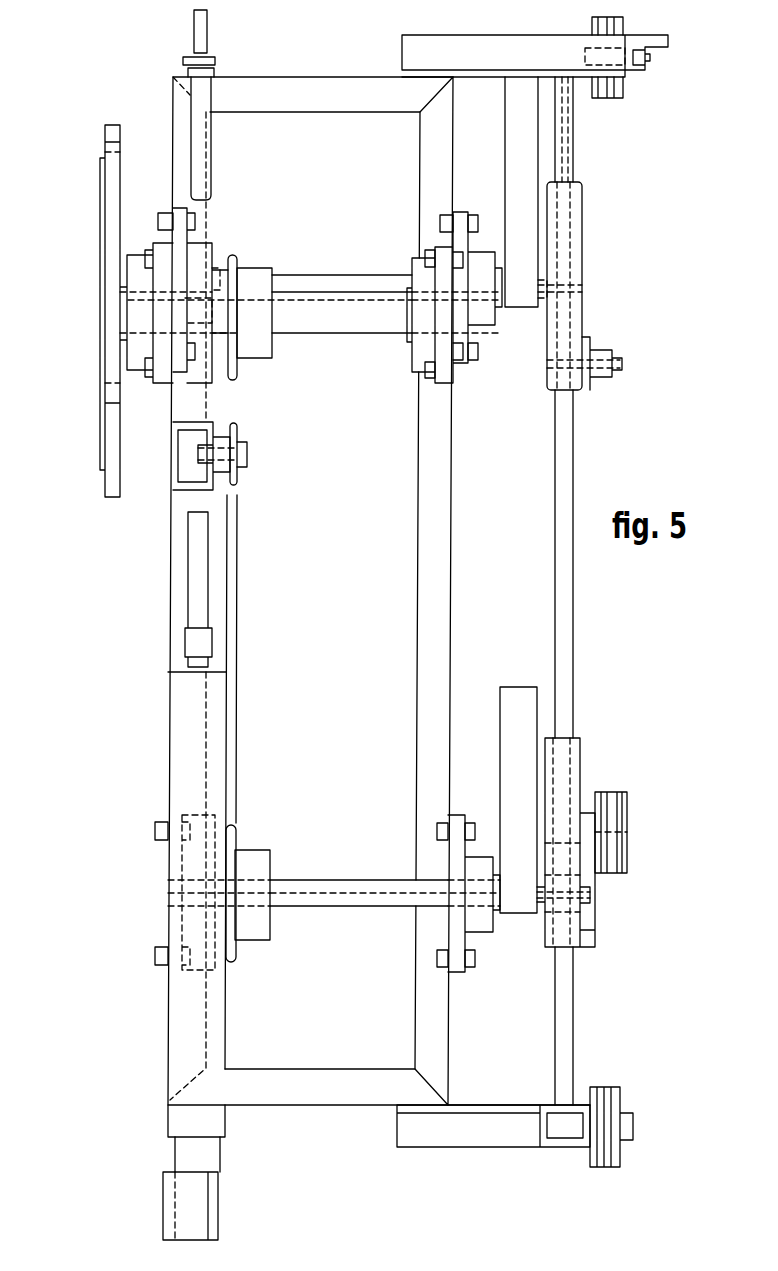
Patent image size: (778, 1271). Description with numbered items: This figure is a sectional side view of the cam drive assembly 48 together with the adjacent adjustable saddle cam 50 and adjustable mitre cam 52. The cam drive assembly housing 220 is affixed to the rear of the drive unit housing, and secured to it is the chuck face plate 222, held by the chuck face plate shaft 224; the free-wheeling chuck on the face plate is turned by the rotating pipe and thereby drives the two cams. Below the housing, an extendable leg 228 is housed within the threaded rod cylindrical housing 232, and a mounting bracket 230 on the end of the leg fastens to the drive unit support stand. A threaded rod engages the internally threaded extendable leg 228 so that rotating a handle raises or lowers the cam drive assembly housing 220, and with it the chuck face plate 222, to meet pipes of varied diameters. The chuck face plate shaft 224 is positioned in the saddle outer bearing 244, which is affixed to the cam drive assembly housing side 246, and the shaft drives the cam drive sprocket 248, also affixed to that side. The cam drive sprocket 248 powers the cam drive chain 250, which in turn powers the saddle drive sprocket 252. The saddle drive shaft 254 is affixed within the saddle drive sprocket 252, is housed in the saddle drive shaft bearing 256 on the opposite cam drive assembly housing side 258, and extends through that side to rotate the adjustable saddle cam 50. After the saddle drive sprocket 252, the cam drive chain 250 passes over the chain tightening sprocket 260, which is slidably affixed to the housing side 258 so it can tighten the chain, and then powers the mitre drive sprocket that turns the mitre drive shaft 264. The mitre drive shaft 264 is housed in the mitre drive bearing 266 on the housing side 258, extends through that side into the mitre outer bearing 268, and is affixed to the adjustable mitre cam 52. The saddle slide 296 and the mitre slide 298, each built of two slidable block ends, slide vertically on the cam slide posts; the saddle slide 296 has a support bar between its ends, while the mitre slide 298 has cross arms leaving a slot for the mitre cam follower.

The drive assembly frame 48 is at (299, 550).
The adjustable saddle cam 50 is at (517, 208).
The adjustable mitre cam 52 is at (513, 700).
The cam drive assembly housing 220 is at (280, 102).
The chuck face plate 222 is at (110, 292).
The chuck face plate shaft 224 is at (343, 318).
The extendable leg 228 is at (208, 1155).
The mounting bracket 230 is at (213, 1193).
The threaded rod cylindrical housing 232 is at (180, 732).
The saddle outer bearing 244 is at (203, 263).
The cam drive assembly housing side 246 is at (438, 568).
The cam drive sprocket 248 is at (253, 348).
The cam drive chain 250 is at (232, 620).
The saddle drive sprocket 252 is at (235, 263).
The saddle drive shaft 254 is at (342, 287).
The saddle drive shaft bearing 256 is at (483, 323).
The cam drive assembly housing side 258 is at (170, 573).
The chain tightening sprocket 260 is at (245, 450).
The mitre drive shaft 264 is at (325, 890).
The mitre drive bearing 266 is at (482, 928).
The mitre outer bearing 268 is at (197, 922).
The saddle slide 296 is at (583, 337).
The mitre slide 298 is at (580, 760).